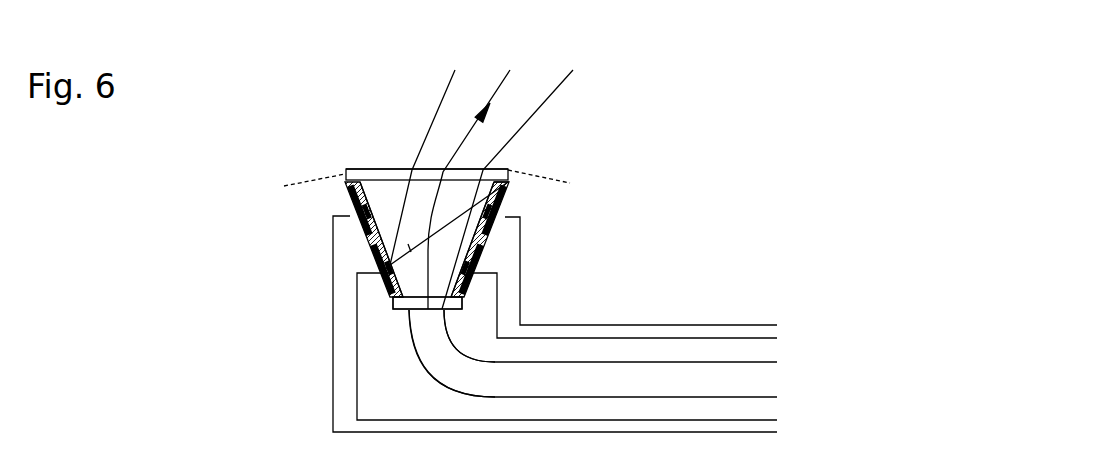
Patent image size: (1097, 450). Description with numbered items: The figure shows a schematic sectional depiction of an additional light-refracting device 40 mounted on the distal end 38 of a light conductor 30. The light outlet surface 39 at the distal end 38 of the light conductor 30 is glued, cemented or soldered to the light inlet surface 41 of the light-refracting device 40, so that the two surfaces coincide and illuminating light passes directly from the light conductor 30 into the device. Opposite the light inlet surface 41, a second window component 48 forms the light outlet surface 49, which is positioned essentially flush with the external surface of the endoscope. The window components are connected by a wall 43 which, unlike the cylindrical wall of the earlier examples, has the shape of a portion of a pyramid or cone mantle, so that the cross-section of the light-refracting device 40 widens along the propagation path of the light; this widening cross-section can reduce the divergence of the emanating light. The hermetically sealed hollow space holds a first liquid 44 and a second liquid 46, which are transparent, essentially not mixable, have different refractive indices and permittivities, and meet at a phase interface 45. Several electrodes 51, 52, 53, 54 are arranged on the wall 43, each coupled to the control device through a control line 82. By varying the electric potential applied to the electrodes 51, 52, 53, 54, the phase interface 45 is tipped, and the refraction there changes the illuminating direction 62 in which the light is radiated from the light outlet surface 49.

The light conductor 30 is at (689, 362).
The distal end of the light conductor 38 is at (427, 317).
The light outlet surface of the light conductor 39 is at (421, 307).
The light inlet surface of the light-refracting device 41 is at (393, 298).
The light-refracting device 40 is at (612, 160).
The wall 43 is at (509, 182).
The first liquid 44 is at (403, 272).
The phase interface 45 is at (410, 252).
The second liquid 46 is at (368, 190).
The second window component 48 is at (364, 170).
The light outlet surface of the light-refracting device 49 is at (390, 168).
The electrode 51 is at (345, 197).
The electrode 52 is at (367, 258).
The electrode 53 is at (487, 257).
The electrode 54 is at (503, 197).
The illuminating direction 62 is at (478, 120).
The control line 82 is at (632, 325).